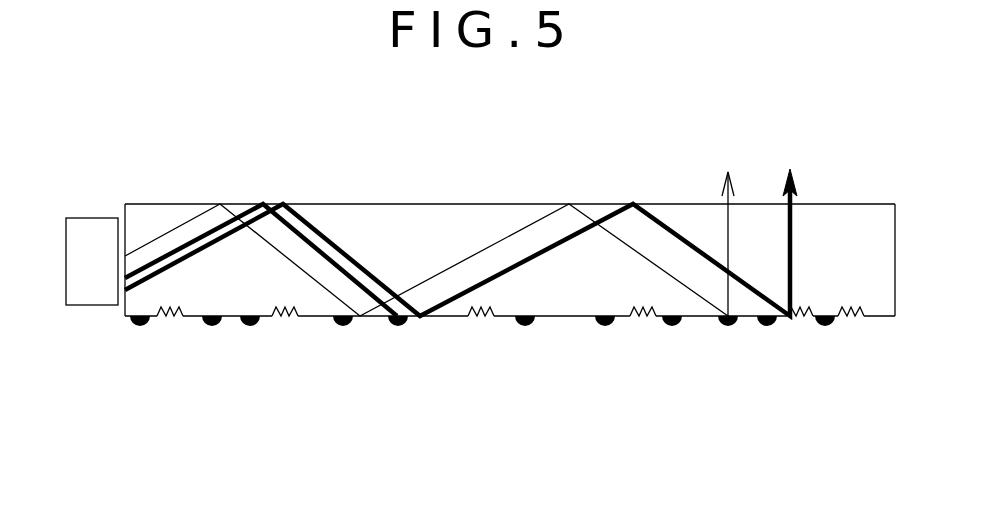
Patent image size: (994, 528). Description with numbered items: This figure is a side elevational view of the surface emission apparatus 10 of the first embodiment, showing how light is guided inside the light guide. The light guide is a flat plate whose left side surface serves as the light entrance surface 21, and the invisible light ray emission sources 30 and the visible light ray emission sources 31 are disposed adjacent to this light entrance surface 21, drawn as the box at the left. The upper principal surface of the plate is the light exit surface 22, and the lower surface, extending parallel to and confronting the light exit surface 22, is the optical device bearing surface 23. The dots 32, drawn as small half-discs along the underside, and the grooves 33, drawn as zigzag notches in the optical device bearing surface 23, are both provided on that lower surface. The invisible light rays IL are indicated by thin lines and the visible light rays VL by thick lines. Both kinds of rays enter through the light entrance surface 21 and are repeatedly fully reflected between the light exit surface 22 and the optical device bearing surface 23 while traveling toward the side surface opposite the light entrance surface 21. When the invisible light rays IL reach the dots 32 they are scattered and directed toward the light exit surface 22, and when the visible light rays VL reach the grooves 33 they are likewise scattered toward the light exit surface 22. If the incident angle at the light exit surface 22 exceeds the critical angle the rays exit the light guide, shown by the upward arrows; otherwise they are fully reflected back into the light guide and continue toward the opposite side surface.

The surface emission apparatus 10 is at (471, 298).
The light entrance surface 21 is at (119, 206).
The light exit surface 22 is at (430, 204).
The optical device bearing surface 23 is at (431, 317).
The invisible light ray emission source 30 is at (83, 299).
The visible light ray emission source 31 is at (80, 306).
The dot 32 is at (525, 327).
The groove 33 is at (653, 318).
The invisible light rays IL is at (165, 234).
The visible light rays VL is at (336, 245).